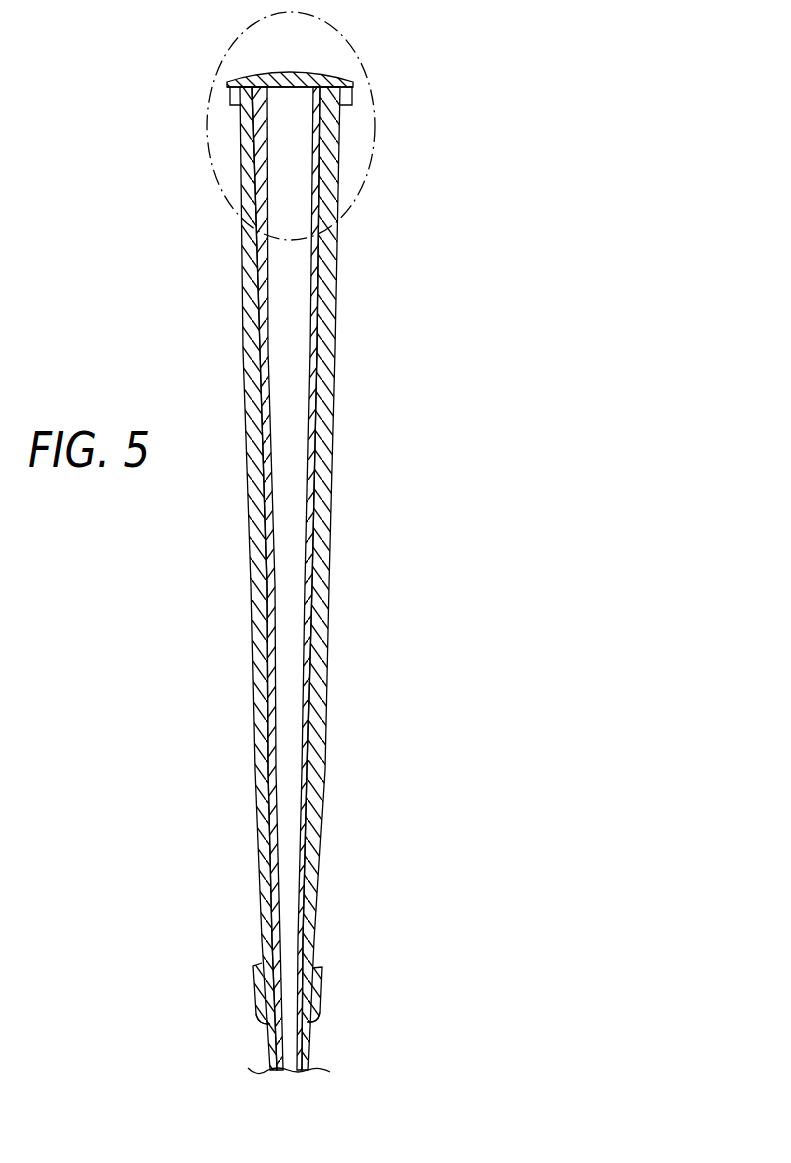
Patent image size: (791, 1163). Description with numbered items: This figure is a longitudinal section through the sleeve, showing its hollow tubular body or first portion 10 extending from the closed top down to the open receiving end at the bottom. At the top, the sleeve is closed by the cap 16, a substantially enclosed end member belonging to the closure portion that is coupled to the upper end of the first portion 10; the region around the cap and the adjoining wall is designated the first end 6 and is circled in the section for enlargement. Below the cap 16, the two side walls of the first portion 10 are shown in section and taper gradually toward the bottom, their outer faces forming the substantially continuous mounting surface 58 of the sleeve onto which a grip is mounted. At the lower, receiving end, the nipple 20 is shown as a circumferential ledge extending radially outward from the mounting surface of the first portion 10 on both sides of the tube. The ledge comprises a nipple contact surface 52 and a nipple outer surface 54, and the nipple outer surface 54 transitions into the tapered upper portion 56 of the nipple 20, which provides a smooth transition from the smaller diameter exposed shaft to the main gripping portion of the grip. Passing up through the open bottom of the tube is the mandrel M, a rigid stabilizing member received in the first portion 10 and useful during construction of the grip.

The first end 6 is at (205, 173).
The first portion 10 is at (331, 578).
The cap 16 is at (318, 78).
The nipple 20 is at (282, 984).
The nipple contact surface 52 is at (318, 965).
The nipple outer surface 54 is at (261, 993).
The tapered upper portion 56 is at (323, 1020).
The mounting surface 58 is at (329, 569).
The mandrel M is at (307, 1053).